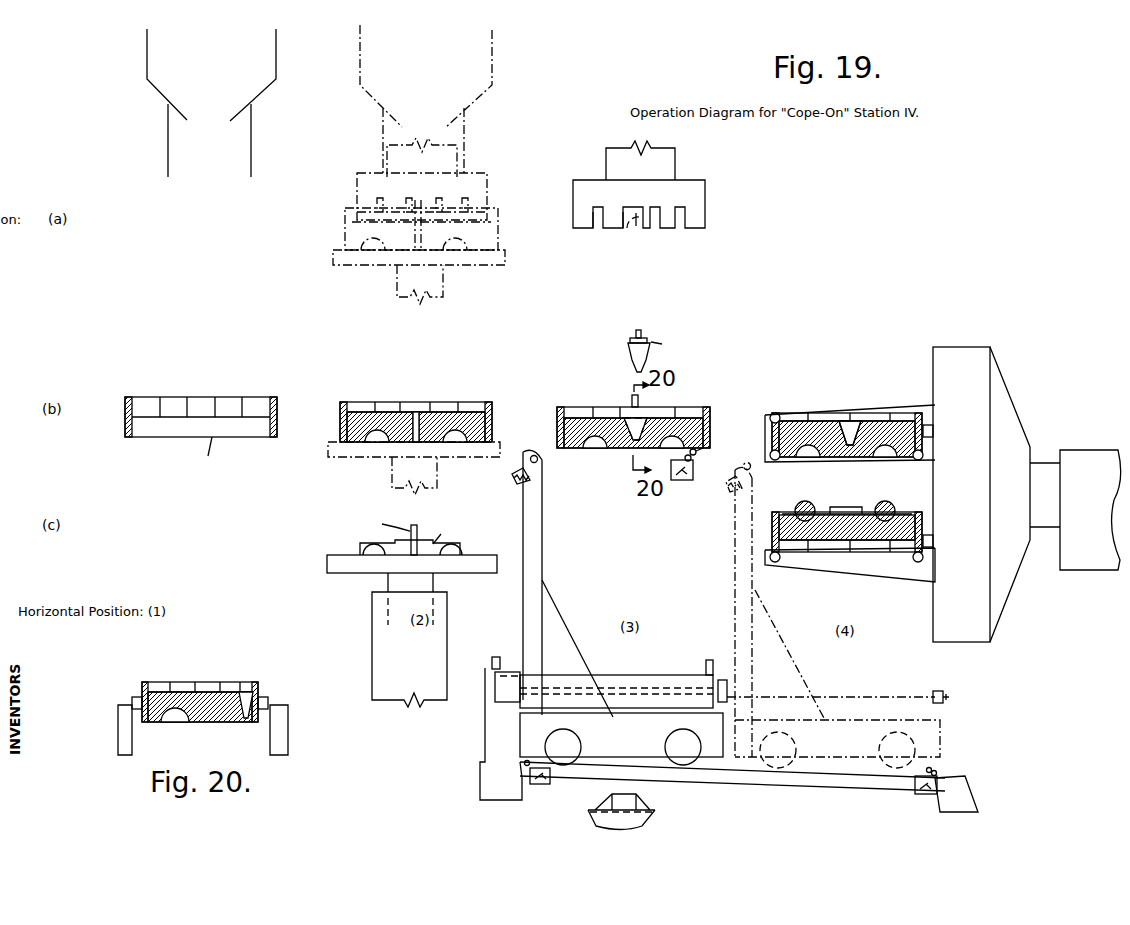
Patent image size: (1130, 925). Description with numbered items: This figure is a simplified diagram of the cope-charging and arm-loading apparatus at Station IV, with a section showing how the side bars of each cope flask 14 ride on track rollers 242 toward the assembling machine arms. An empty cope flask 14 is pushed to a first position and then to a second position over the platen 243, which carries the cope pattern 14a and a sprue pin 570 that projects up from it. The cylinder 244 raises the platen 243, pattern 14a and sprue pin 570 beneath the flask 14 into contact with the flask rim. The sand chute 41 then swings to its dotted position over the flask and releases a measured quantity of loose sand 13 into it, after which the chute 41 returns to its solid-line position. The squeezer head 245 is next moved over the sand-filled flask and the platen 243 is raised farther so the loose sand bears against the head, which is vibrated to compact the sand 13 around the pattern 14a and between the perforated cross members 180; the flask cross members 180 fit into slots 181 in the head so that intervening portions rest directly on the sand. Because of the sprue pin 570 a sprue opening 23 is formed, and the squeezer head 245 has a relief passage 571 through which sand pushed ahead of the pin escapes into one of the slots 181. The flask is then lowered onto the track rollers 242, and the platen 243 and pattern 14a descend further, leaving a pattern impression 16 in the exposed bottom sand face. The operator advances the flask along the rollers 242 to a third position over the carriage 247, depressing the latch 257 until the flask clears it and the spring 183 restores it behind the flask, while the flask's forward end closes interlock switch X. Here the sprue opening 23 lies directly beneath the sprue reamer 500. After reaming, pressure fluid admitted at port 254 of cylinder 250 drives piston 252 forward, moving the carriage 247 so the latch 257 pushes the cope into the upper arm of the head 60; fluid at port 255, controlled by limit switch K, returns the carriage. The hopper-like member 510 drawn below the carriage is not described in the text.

In FIG. 19, the sand chute 41 is at (168, 143).
In FIG. 19, the slots 181 is at (414, 210).
In FIG. 19, the relief passage 571 is at (436, 214).
In FIG. 19, the squeezer head 245 is at (500, 232).
In FIG. 19, the cope flask 14 is at (126, 403).
In FIG. 20, the cope flask 14 is at (152, 683).
In FIG. 19, the perforated cross members 180 is at (240, 413).
In FIG. 19, the sprue pin 570 is at (418, 411).
In FIG. 19, the sand 13 is at (470, 413).
In FIG. 19, the platen 243 is at (327, 562).
In FIG. 19, the cope pattern 14a is at (450, 550).
In FIG. 19, the cylinder 244 is at (372, 642).
In FIG. 19, the latch 257 is at (550, 448).
In FIG. 19, the spring 183 is at (540, 474).
In FIG. 19, the piston 252 is at (486, 704).
In FIG. 19, the cylinder 250 is at (681, 676).
In FIG. 19, the port 254 is at (496, 656).
In FIG. 19, the port 255 is at (708, 660).
In FIG. 19, the carriage 247 is at (606, 768).
In FIG. 19, the sand hopper 510 is at (630, 800).
In FIG. 19, the limit switch K is at (925, 797).
In FIG. 19, the sprue opening 23 is at (629, 446).
In FIG. 20, the sprue opening 23 is at (246, 692).
In FIG. 19, the sprue reamer 500 is at (627, 348).
In FIG. 19, the interlock switch X is at (684, 482).
In FIG. 19, the head 60 is at (1016, 403).
In FIG. 20, the pattern impression 16 is at (178, 726).
In FIG. 20, the track rollers 242 is at (134, 698).